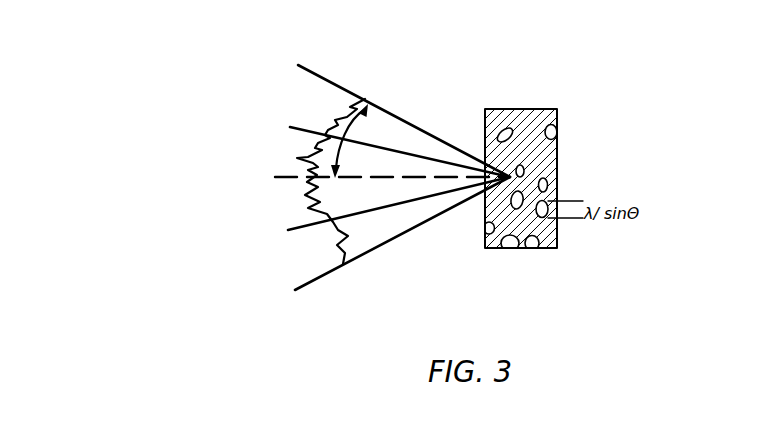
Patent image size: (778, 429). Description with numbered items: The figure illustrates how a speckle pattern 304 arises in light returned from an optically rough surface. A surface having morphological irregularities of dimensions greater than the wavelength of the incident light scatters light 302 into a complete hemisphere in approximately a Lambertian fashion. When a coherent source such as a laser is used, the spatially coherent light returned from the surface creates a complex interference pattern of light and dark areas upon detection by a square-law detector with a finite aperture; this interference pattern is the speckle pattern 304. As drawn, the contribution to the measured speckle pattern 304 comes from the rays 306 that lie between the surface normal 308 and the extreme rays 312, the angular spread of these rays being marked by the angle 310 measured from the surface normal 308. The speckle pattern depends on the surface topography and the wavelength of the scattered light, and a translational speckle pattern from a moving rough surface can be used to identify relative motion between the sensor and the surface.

The scattered light 302 is at (297, 158).
The speckle pattern 304 is at (538, 100).
The rays 306 is at (362, 144).
The surface normal 308 is at (290, 178).
The angle theta 310 is at (351, 150).
The extreme rays 312 is at (382, 108).